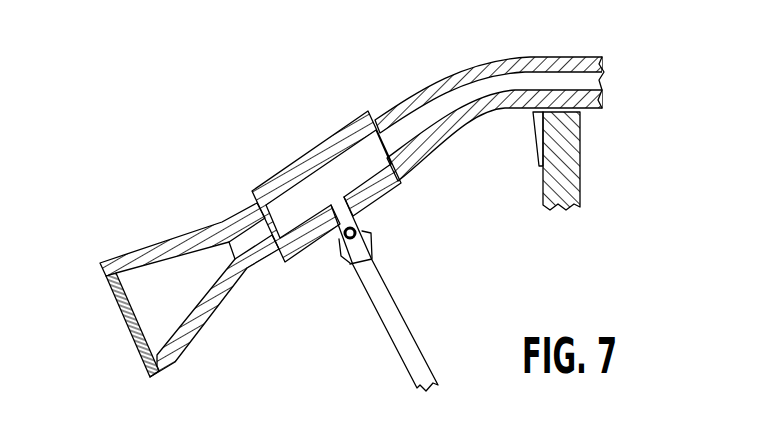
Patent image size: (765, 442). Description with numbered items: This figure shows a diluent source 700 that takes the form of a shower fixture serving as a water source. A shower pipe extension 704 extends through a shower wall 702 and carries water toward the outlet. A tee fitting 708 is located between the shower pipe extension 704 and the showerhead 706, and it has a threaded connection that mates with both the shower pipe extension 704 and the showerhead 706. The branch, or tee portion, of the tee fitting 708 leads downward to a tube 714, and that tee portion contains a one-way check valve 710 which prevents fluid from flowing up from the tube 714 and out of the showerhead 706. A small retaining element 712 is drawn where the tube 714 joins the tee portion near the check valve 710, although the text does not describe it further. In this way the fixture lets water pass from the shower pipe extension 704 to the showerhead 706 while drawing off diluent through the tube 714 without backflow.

The diluent source 700 is at (365, 195).
The shower wall 702 is at (580, 186).
The shower pipe extension 704 is at (438, 147).
The showerhead 706 is at (113, 259).
The tee fitting 708 is at (301, 156).
The one-way check valve 710 is at (338, 239).
The clip 712 is at (350, 262).
The tube 714 is at (391, 296).